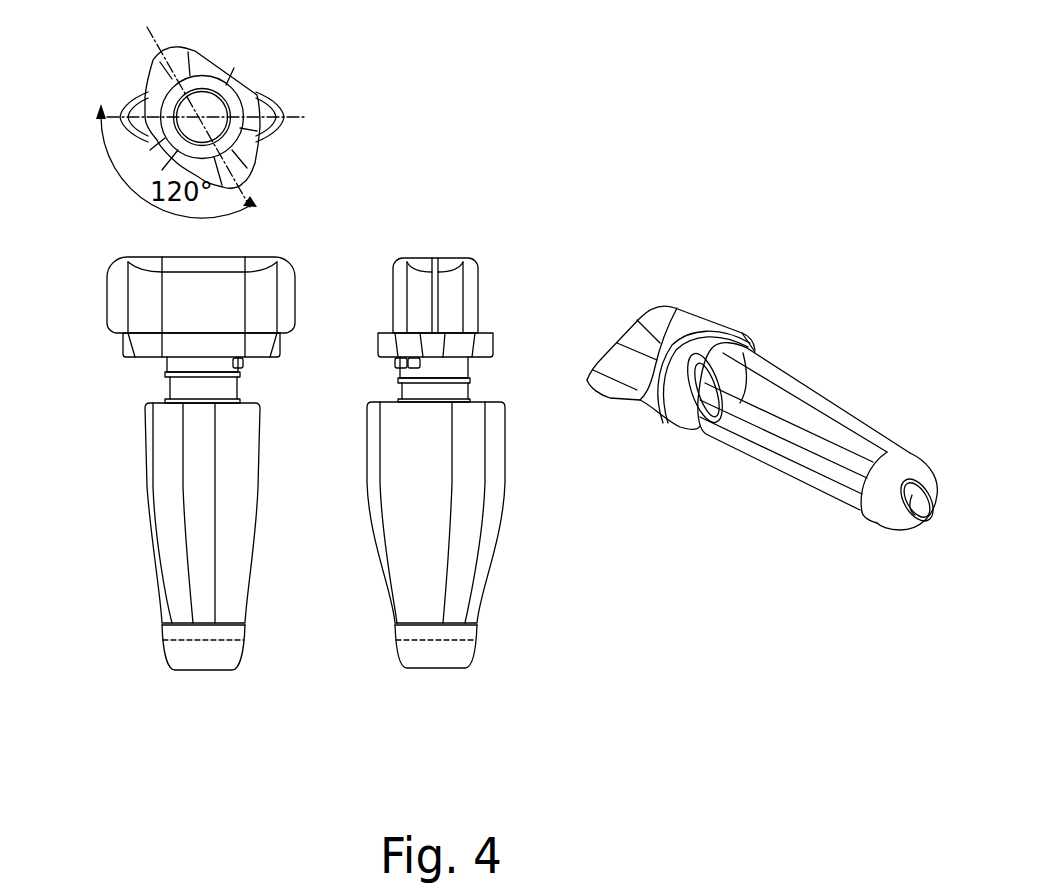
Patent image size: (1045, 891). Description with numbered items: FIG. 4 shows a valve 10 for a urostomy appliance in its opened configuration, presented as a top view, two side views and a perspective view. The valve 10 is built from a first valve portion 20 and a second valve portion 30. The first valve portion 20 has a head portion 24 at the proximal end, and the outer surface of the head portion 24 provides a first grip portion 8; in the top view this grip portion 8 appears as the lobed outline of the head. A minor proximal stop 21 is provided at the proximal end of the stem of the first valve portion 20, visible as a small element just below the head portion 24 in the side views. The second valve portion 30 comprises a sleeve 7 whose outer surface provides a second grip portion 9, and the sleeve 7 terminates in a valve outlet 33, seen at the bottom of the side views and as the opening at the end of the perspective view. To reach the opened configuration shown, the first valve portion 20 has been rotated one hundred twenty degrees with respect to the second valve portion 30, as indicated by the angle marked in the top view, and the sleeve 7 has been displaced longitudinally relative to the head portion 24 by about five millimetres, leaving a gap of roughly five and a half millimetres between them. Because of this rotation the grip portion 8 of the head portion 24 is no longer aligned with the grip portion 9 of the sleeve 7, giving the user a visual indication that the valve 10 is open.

The sleeve 7 is at (172, 532).
The first grip portion 8 is at (245, 178).
The second grip portion 9 is at (122, 115).
The valve 10 is at (100, 249).
The first valve portion 20 is at (743, 259).
The minor proximal stop 21 is at (243, 363).
The head portion 24 is at (258, 275).
The second valve portion 30 is at (856, 351).
The valve outlet 33 is at (433, 670).